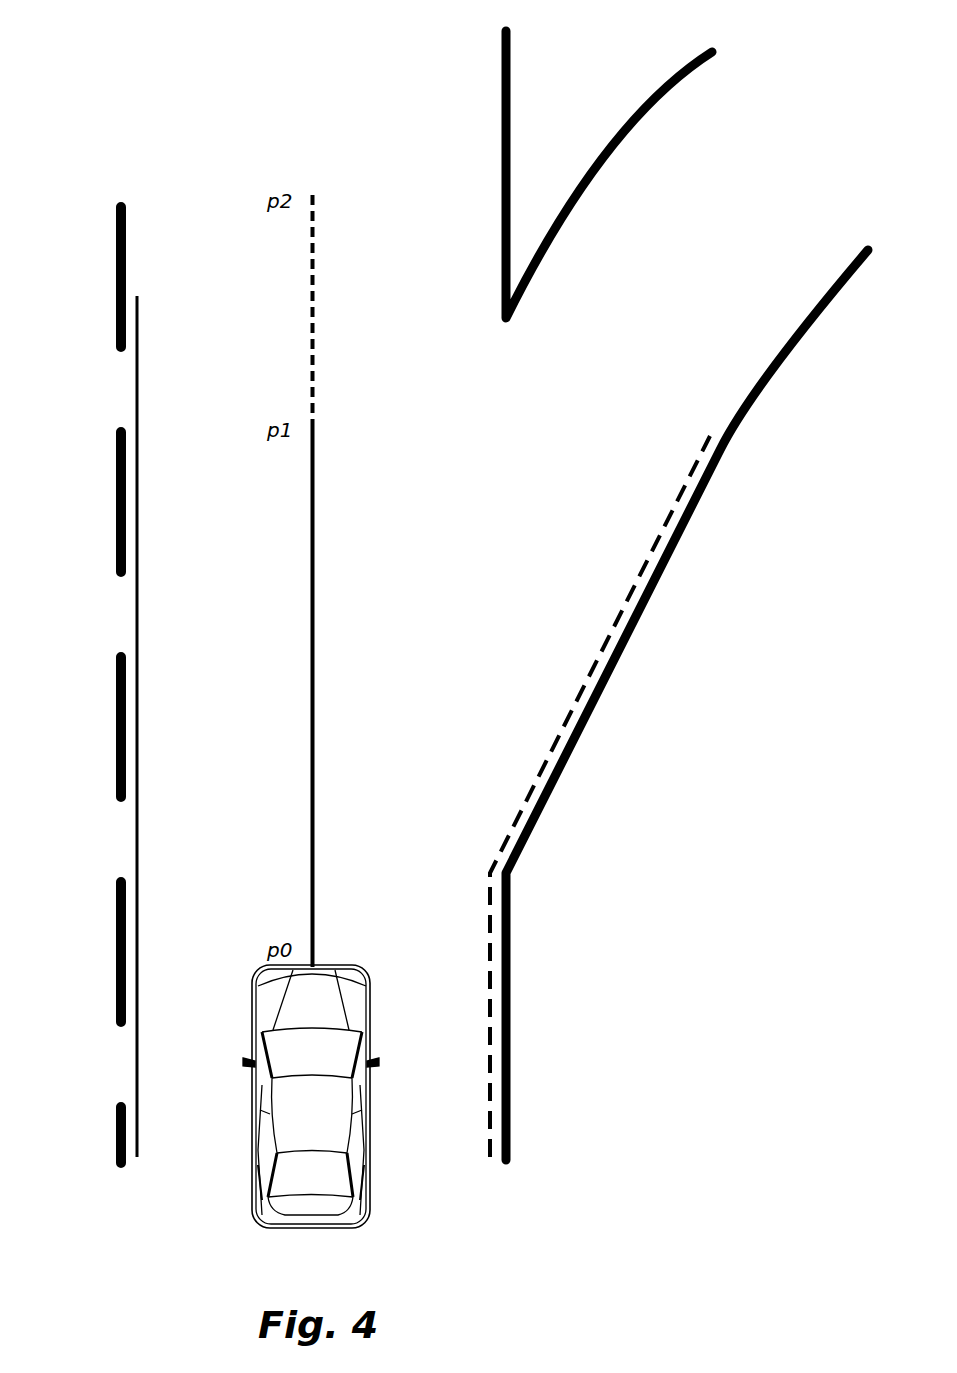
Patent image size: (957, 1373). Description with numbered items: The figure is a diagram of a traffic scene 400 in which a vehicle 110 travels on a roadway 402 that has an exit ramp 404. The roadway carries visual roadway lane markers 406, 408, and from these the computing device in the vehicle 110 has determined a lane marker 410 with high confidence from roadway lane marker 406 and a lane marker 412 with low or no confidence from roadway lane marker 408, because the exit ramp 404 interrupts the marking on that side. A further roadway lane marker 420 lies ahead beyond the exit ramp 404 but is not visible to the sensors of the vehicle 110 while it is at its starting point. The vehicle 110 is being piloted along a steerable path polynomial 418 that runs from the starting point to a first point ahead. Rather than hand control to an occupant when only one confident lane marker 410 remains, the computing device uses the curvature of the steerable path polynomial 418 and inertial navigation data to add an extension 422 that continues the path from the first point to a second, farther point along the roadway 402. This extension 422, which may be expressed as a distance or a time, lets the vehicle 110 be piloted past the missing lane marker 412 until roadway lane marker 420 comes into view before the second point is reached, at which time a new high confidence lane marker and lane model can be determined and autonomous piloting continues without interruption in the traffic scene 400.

The traffic scene 400 is at (338, 21).
The roadway 402 is at (215, 1127).
The exit ramp 404 is at (615, 412).
The roadway lane marker 406 is at (118, 927).
The roadway lane marker 408 is at (510, 933).
The lane marker 410 is at (139, 836).
The lane marker 412 is at (490, 908).
The steerable path polynomial 418 is at (314, 649).
The roadway lane marker 420 is at (503, 183).
The extension 422 is at (314, 301).
The vehicle 110 is at (370, 1112).